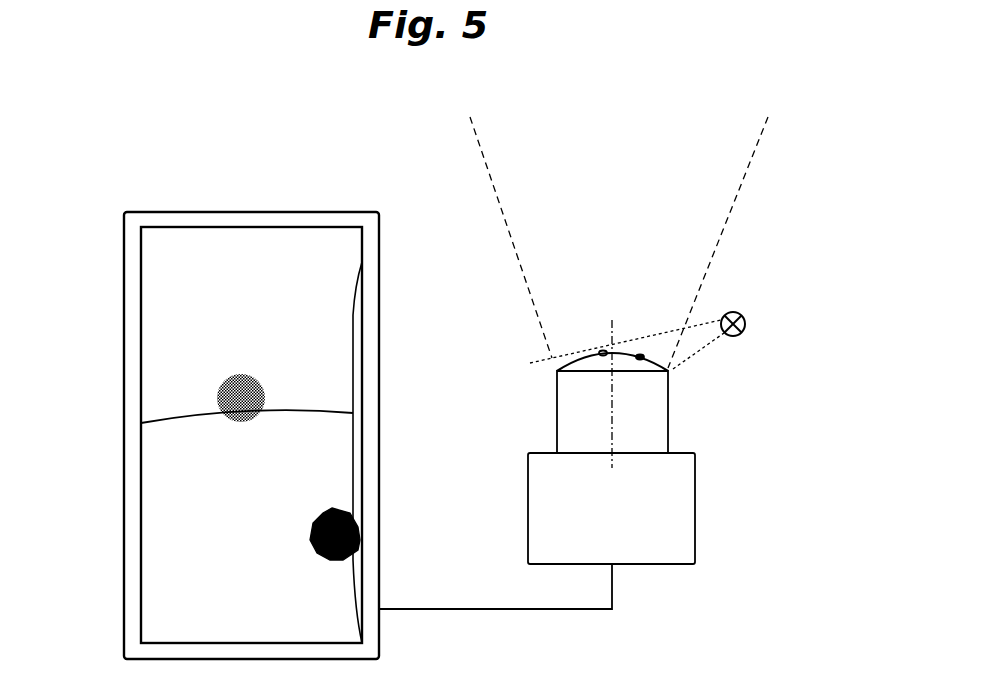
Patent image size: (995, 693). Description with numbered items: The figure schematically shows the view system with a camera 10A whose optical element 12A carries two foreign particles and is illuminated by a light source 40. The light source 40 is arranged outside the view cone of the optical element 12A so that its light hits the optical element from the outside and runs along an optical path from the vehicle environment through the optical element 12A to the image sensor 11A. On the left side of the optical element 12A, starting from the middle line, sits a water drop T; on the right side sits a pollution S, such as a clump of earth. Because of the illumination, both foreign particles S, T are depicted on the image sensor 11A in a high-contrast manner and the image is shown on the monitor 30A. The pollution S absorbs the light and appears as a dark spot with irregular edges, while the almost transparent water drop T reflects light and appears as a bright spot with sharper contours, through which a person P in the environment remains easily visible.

The monitor 30A is at (124, 278).
The person P is at (218, 390).
The light source 40 is at (746, 317).
The optical element 12A is at (630, 366).
The image sensor 11A is at (665, 499).
The camera 10A is at (665, 364).
The water drop T is at (599, 350).
The pollution S is at (642, 355).